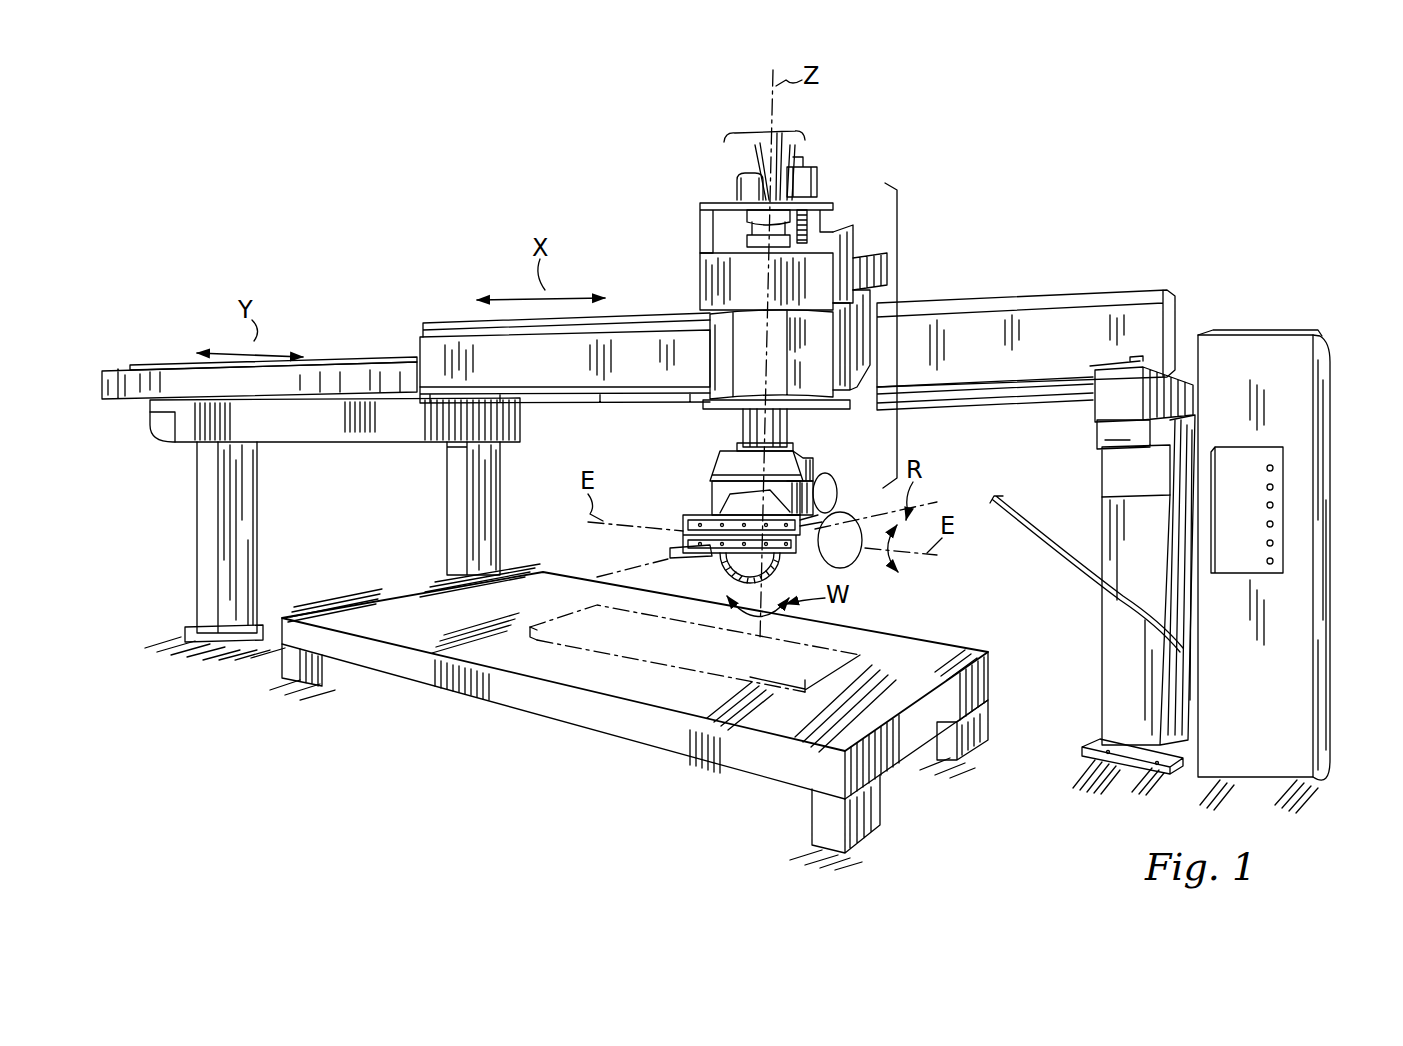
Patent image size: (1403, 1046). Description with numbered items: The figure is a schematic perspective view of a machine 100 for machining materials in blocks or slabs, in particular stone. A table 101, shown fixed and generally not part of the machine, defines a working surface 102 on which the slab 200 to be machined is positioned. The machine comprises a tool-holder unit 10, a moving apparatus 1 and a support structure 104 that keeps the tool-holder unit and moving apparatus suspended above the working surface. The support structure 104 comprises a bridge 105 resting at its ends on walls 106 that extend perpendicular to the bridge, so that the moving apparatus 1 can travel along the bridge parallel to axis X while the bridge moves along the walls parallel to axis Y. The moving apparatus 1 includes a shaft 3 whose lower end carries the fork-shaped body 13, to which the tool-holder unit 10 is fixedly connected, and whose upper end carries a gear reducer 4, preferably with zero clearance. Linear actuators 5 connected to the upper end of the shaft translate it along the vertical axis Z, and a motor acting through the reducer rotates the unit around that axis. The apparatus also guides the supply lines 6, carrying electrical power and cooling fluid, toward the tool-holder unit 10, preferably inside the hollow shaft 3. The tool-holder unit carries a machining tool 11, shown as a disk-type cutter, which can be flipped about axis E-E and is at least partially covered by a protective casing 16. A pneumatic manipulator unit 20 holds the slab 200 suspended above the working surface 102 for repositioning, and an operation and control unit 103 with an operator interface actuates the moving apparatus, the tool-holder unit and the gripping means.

The moving apparatus 1 is at (900, 333).
The shaft 3 is at (745, 236).
The gear reducer 4 is at (748, 222).
The linear actuators 5 is at (829, 166).
The supply lines 6 is at (768, 126).
The tool-holder unit 10 is at (706, 564).
The machining tool 11 is at (735, 570).
The fork-shaped body 13 is at (712, 461).
The protective casing 16 is at (712, 495).
The manipulator unit 20 is at (668, 540).
The machine 100 is at (448, 261).
The table 101 is at (762, 752).
The working surface 102 is at (885, 712).
The operation and control unit 103 is at (1280, 698).
The support structure 104 is at (1141, 286).
The bridge 105 is at (1045, 340).
The walls 106 is at (353, 385).
The slab 200 is at (650, 642).